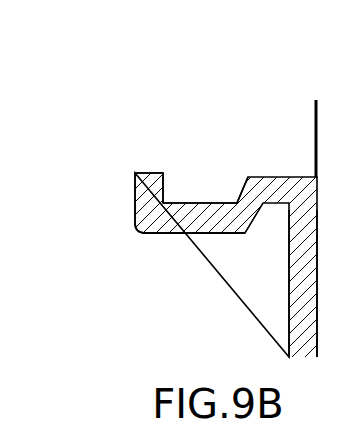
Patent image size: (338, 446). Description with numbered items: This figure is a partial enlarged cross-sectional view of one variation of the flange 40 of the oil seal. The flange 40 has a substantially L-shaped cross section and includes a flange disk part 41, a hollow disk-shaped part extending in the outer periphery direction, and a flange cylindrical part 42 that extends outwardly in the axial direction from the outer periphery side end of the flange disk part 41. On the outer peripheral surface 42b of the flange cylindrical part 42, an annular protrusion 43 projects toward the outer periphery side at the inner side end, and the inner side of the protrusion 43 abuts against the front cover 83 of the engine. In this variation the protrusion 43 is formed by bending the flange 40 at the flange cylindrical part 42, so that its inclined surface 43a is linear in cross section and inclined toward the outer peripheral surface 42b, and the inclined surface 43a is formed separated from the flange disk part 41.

The flange 40 is at (126, 171).
The flange disk part 41 is at (288, 284).
The flange cylindrical part 42 is at (185, 242).
The outer peripheral surface 42b is at (201, 203).
The protrusion 43 is at (275, 168).
The inclined surface 43a is at (240, 197).
The front cover 83 is at (313, 118).